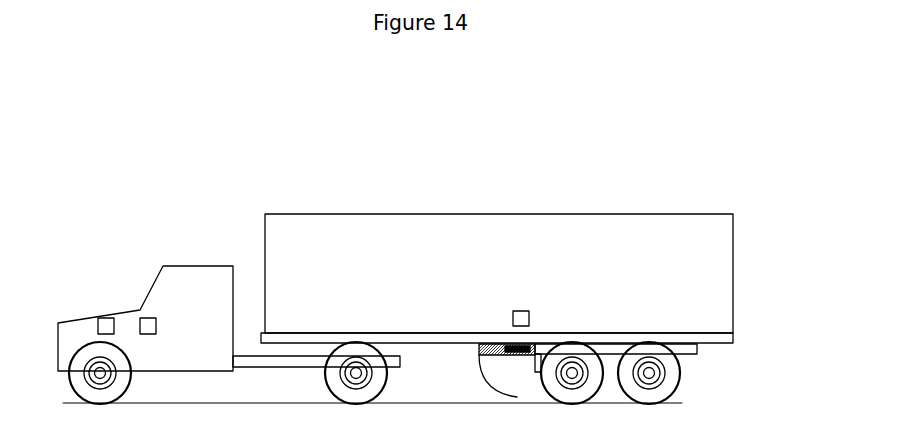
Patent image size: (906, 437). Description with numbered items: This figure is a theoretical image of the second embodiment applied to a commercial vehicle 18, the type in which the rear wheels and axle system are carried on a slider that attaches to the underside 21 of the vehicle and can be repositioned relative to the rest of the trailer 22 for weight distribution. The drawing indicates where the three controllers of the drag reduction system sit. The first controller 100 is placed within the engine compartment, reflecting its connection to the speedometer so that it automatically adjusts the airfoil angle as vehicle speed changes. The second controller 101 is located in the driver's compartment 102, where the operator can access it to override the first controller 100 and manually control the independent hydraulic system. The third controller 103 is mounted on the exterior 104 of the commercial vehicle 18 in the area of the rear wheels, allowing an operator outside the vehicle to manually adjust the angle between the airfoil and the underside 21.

The commercial vehicle type two 18 is at (733, 153).
The trailer 22 is at (733, 207).
The underside 21 is at (719, 345).
The first controller 100 is at (98, 317).
The second controller 101 is at (145, 317).
The driver's compartment 102 is at (217, 324).
The third controller 103 is at (516, 307).
The exterior 104 is at (497, 278).